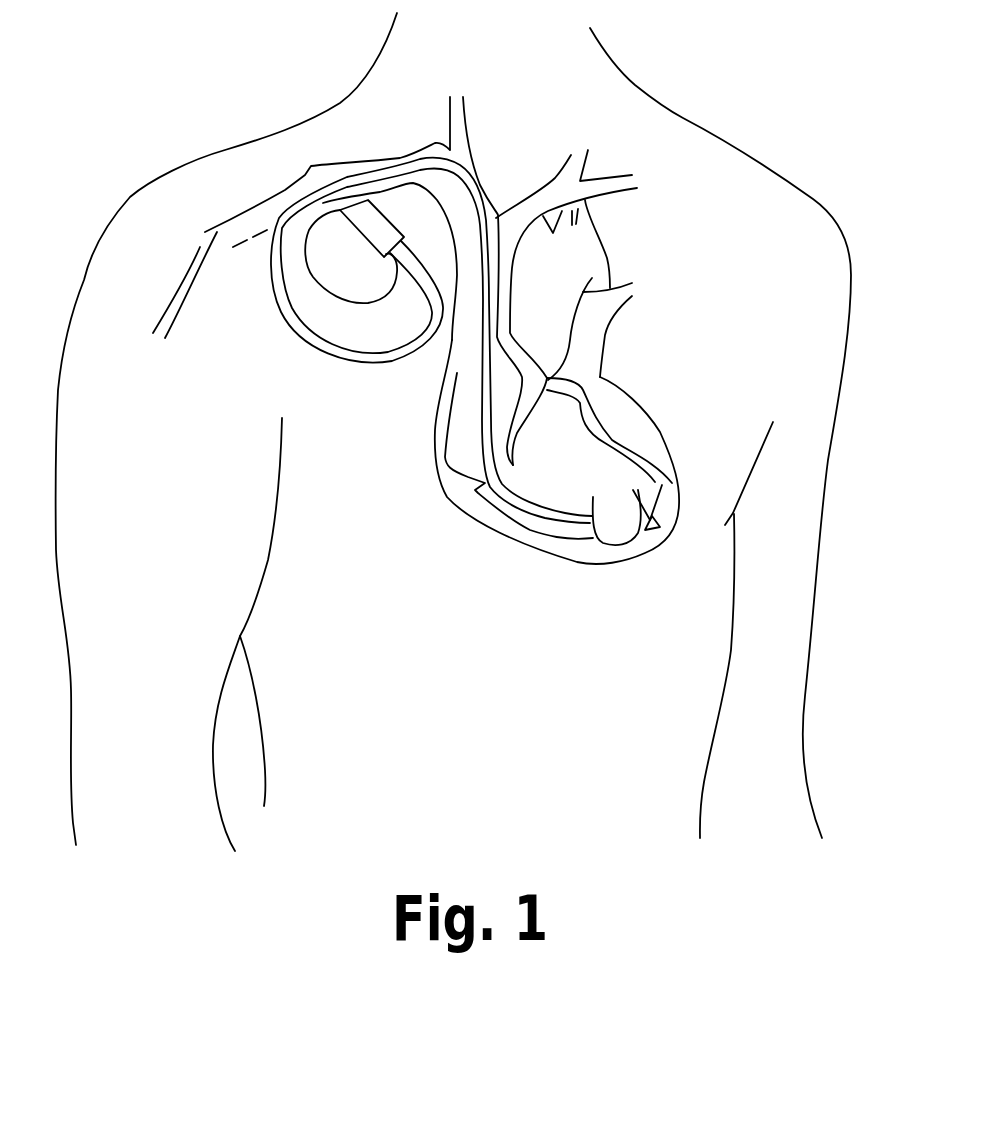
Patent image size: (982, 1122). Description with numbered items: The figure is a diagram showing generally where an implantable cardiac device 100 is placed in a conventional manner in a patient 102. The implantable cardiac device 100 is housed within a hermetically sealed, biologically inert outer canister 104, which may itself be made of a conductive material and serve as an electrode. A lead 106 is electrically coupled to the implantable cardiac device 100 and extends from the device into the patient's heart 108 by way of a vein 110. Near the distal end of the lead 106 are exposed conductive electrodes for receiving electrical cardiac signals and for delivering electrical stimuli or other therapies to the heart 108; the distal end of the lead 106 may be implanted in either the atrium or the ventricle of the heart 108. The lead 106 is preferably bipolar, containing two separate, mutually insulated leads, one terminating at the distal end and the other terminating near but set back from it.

The implantable cardiac device 100 is at (414, 340).
The patient 102 is at (687, 118).
The outer canister 104 is at (307, 263).
The lead 106 is at (342, 308).
The heart 108 is at (528, 540).
The vein 110 is at (217, 220).